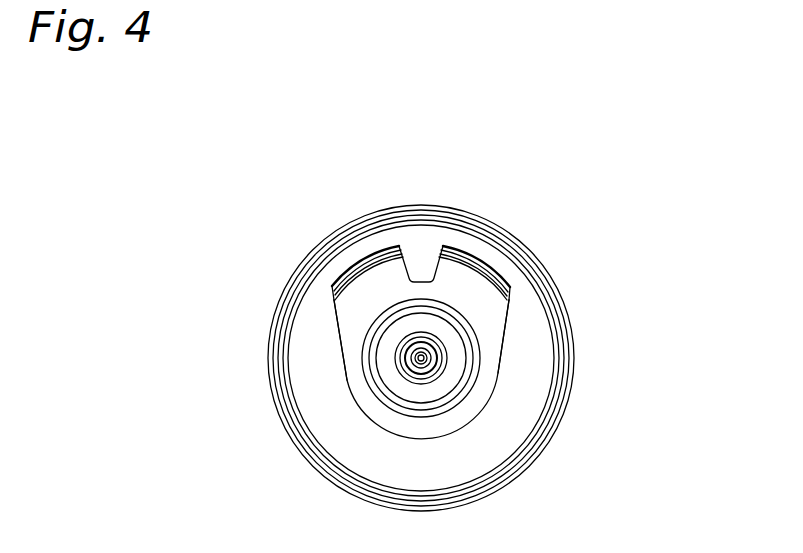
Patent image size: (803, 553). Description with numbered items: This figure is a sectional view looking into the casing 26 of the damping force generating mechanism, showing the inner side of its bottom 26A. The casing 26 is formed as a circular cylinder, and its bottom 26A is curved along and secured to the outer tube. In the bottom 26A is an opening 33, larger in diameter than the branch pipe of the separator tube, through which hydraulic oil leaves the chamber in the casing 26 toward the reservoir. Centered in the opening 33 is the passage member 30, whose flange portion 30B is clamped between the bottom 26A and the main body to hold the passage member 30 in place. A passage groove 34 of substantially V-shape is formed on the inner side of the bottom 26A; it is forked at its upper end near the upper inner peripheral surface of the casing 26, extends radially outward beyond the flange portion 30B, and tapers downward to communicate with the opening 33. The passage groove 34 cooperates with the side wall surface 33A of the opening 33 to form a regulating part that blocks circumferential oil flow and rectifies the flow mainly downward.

The casing 26 is at (540, 257).
The bottom of the casing 26A is at (543, 327).
The passage member 30 is at (480, 365).
The flange portion 30B is at (357, 270).
The opening 33 is at (392, 422).
The side wall surface of the opening 33A is at (345, 382).
The passage groove 34 is at (370, 291).